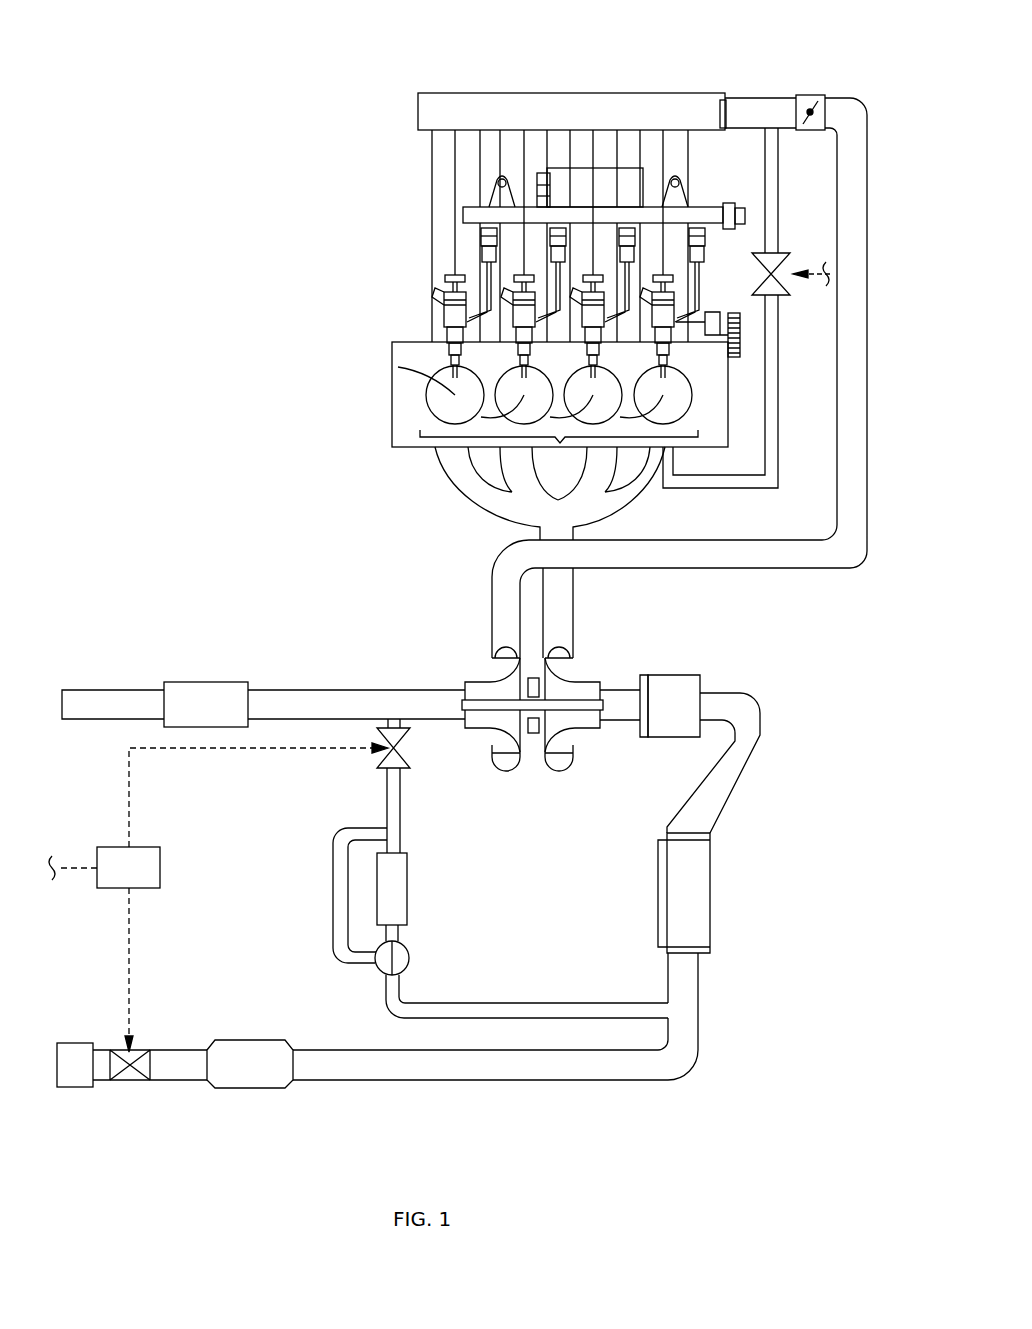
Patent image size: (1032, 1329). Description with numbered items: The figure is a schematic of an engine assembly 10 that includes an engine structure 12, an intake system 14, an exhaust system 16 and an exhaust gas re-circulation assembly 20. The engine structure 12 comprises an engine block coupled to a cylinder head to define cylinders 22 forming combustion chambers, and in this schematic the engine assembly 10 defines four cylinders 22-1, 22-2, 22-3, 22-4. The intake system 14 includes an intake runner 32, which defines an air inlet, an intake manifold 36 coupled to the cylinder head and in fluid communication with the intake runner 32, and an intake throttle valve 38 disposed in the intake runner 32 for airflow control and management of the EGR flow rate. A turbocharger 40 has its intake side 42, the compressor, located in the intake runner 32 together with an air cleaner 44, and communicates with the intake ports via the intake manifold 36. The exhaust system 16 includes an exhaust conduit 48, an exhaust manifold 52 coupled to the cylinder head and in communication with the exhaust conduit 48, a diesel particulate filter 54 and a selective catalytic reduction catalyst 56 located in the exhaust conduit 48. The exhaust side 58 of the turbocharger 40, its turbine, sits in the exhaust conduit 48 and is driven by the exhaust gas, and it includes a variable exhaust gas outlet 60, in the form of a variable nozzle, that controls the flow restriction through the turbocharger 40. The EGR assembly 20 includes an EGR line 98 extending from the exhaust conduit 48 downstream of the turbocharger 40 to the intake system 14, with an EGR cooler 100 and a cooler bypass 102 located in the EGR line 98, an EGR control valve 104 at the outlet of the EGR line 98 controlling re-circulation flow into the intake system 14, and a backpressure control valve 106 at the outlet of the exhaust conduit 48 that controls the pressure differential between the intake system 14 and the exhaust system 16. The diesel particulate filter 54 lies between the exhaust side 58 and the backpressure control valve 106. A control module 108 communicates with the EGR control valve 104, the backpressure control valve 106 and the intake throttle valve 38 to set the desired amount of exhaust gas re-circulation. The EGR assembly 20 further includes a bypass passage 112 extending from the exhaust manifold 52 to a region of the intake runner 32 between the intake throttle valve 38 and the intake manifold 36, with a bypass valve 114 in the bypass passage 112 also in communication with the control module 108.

The engine assembly 10 is at (483, 544).
The engine structure 12 is at (572, 408).
The intake system 14 is at (853, 82).
The exhaust system 16 is at (427, 837).
The exhaust gas re-circulation (EGR) assembly 20 is at (358, 885).
The cylinders 22 is at (559, 452).
The first cylinder 22-1 is at (441, 395).
The second cylinder 22-2 is at (517, 395).
The third cylinder 22-3 is at (586, 395).
The fourth cylinder 22-4 is at (656, 395).
The intake runner 32 is at (867, 228).
The intake manifold 36 is at (583, 93).
The intake throttle valve 38 is at (808, 95).
The turbocharger 40 is at (531, 674).
The intake side (compressor) 42 is at (475, 745).
The air cleaner 44 is at (205, 682).
The exhaust conduit 48 is at (733, 795).
The exhaust manifold 52 is at (632, 508).
The diesel particulate filter (DPF) 54 is at (710, 893).
The selective catalytic reduction (SCR) catalyst 56 is at (242, 1040).
The exhaust side (turbine) 58 is at (604, 669).
The variable exhaust gas outlet 60 is at (608, 680).
The EGR line 98 is at (548, 1003).
The EGR cooler 100 is at (408, 888).
The cooler bypass 102 is at (333, 895).
The EGR control valve 104 is at (380, 765).
The backpressure control valve 106 is at (145, 1048).
The control module 108 is at (218, 897).
The bypass passage 112 is at (785, 210).
The bypass valve 114 is at (779, 275).